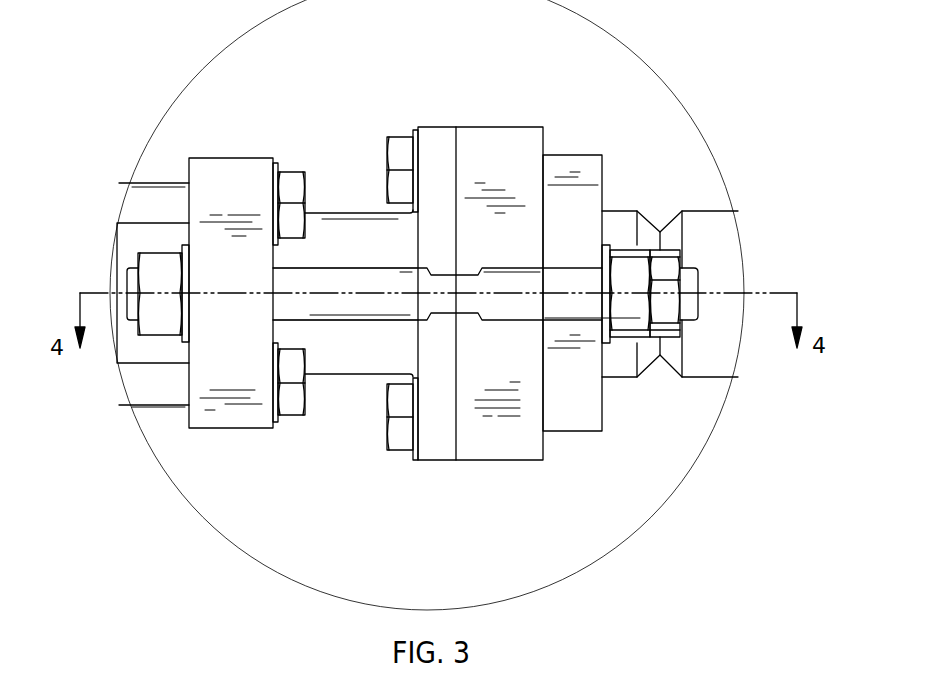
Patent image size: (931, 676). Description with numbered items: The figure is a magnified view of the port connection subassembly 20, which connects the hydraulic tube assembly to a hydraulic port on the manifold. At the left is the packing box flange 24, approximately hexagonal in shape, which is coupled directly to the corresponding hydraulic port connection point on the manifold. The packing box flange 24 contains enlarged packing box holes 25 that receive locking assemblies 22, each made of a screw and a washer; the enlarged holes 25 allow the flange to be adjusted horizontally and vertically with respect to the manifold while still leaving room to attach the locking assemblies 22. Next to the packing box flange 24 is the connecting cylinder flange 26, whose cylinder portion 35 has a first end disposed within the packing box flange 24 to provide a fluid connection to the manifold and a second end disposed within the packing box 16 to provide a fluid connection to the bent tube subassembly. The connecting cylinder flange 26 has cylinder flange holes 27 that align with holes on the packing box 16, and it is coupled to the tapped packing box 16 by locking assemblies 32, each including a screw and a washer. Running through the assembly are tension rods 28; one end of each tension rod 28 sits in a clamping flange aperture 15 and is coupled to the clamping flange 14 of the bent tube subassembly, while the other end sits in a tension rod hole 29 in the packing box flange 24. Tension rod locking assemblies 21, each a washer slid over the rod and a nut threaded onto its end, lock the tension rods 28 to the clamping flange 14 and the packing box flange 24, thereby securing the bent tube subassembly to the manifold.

The clamping flange 14 is at (588, 158).
The clamping flange aperture 15 is at (603, 322).
The packing box 16 is at (505, 452).
The port connection subassembly 20 is at (440, 545).
The tension rod locking assembly 21 is at (687, 270).
The locking assembly 22 is at (303, 184).
The packing box flange 24 is at (228, 172).
The packing box hole 25 is at (298, 187).
The connecting cylinder flange 26 is at (437, 133).
The cylinder flange hole 27 is at (415, 433).
The tension rod 28 is at (508, 300).
The tension rod hole 29 is at (182, 272).
The locking assembly 32 is at (388, 444).
The cylinder portion 35 is at (322, 308).